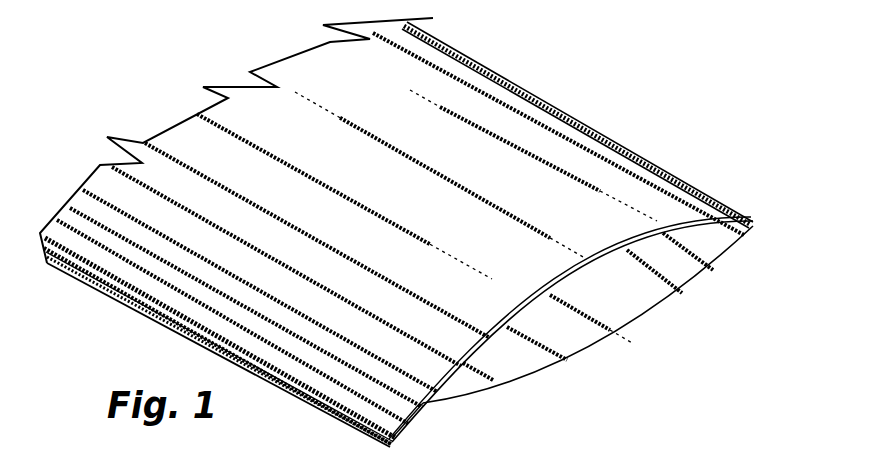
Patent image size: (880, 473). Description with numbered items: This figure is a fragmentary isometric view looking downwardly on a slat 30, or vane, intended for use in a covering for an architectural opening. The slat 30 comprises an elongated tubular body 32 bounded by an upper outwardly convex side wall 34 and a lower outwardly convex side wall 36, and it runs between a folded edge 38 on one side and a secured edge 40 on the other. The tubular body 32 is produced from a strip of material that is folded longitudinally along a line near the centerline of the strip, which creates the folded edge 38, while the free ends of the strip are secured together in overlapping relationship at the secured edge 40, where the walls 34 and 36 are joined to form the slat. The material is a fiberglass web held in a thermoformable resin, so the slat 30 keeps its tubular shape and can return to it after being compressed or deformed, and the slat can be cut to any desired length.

The slat 30 is at (476, 35).
The elongated tubular body 32 is at (525, 115).
The upper outwardly convex side wall 34 is at (208, 142).
The lower outwardly convex side wall 36 is at (590, 342).
The folded edge 38 is at (667, 172).
The secured edge 40 is at (413, 417).